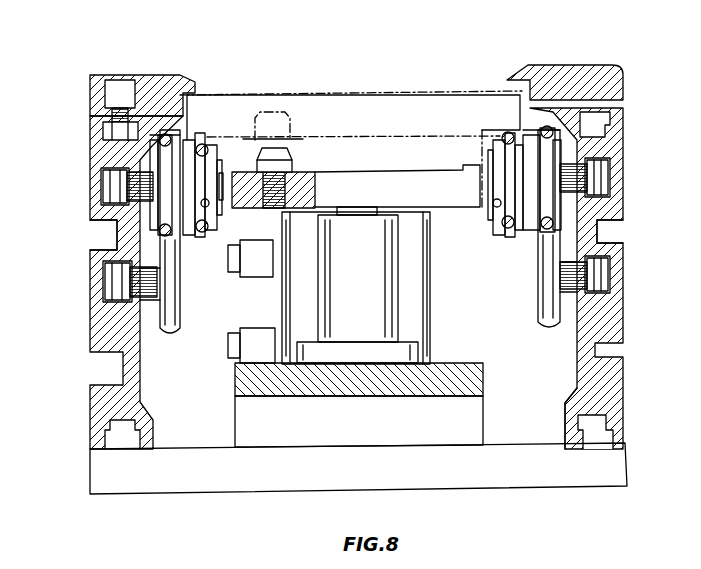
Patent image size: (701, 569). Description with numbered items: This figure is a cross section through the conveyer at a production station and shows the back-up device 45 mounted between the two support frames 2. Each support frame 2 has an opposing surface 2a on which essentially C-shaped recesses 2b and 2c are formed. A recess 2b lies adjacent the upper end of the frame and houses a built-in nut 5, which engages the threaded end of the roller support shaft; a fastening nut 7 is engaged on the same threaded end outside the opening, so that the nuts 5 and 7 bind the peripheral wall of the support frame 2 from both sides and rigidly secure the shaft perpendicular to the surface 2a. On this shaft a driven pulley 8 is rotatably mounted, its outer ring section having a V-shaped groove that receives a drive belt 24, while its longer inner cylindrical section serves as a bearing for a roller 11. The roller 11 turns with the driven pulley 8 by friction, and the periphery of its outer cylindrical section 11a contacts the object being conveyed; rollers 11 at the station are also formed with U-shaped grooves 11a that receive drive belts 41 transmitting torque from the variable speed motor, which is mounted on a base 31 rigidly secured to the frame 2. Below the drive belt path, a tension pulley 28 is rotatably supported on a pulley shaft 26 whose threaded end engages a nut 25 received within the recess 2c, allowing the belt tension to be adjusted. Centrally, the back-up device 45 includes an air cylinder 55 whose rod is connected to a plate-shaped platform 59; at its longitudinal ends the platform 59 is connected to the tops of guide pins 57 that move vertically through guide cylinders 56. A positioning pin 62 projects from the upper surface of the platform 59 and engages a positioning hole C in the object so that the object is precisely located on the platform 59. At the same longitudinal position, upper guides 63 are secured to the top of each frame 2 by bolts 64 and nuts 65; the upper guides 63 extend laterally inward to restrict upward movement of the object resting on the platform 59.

The support frame 2 is at (90, 350).
The opposing surface 2a is at (577, 371).
The recess 2b is at (108, 190).
The recess 2c is at (106, 283).
The nut 5 is at (104, 166).
The fastening nut 7 is at (112, 222).
The driven pulley 8 is at (180, 135).
The roller 11 is at (214, 160).
The outer cylindrical section 11a is at (207, 206).
The drive belt 24 is at (165, 132).
The nut 25 is at (115, 302).
The pulley shaft 26 is at (147, 302).
The tension pulley 28 is at (176, 307).
The base 31 is at (458, 478).
The drive belt 41 is at (204, 148).
The back-up device 45 is at (218, 370).
The air cylinder 55 is at (431, 298).
The guide cylinder 56 is at (400, 325).
The guide pin 57 is at (358, 207).
The platform 59 is at (424, 167).
The positioning pin 62 is at (300, 137).
The upper guide 63 is at (148, 112).
The bolt 64 is at (112, 84).
The nut 65 is at (103, 130).
The positioning hole C is at (295, 135).